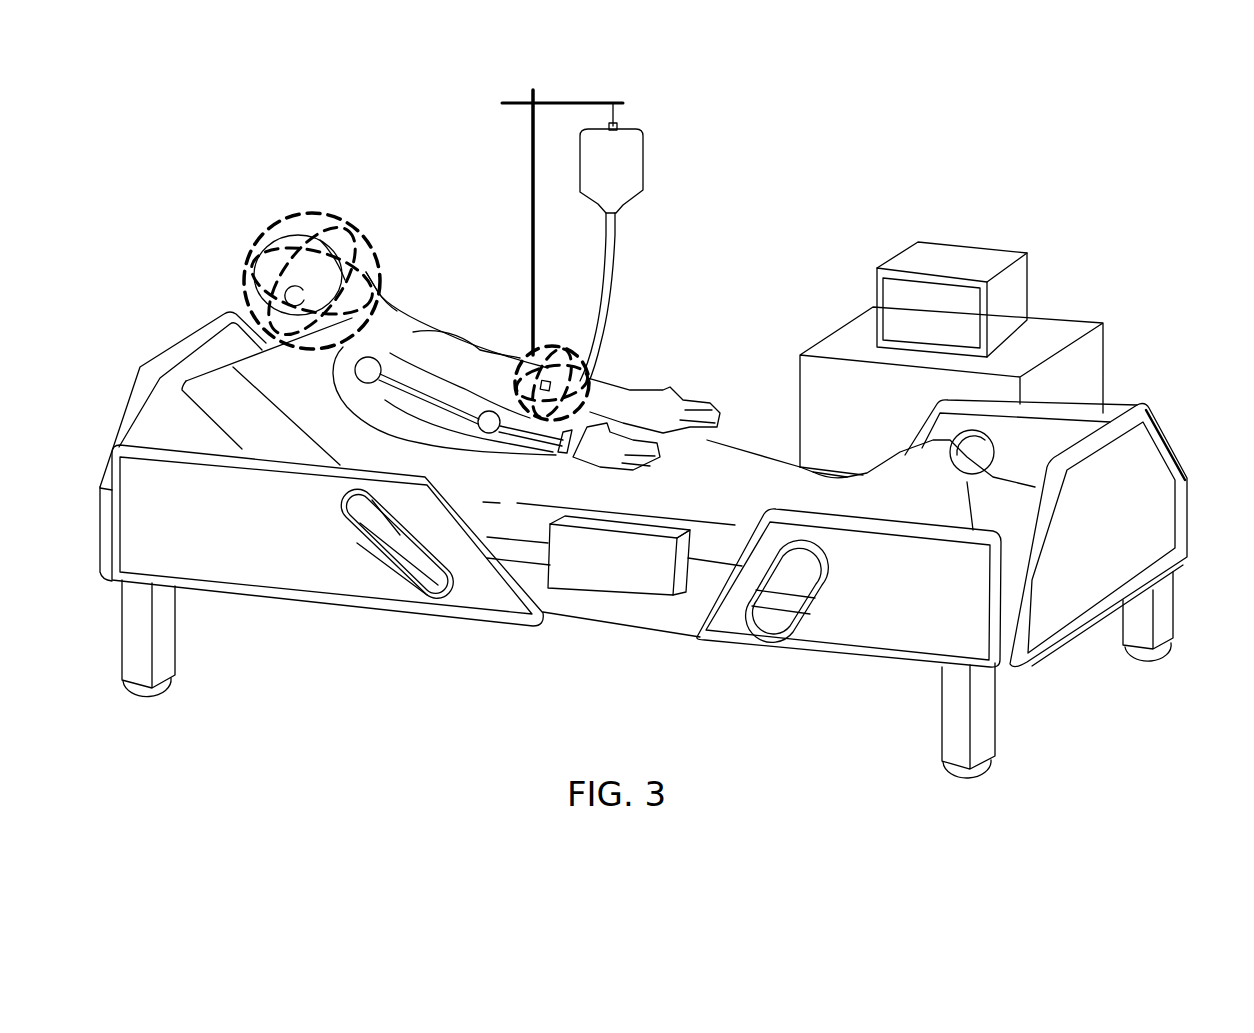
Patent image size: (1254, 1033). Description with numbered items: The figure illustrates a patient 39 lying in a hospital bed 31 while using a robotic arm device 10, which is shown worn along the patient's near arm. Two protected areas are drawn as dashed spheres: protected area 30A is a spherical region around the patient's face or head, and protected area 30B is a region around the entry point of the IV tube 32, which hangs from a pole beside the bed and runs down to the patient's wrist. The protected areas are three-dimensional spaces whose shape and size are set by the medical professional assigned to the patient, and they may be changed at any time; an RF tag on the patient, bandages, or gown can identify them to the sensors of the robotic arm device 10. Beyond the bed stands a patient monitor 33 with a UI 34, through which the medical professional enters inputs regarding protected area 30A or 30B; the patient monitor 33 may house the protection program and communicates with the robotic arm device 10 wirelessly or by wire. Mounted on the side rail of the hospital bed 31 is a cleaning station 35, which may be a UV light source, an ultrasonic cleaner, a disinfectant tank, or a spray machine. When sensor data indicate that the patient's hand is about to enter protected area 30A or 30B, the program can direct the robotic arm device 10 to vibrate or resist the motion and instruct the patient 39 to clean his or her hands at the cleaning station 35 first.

The robotic arm device 10 is at (627, 384).
The protected area 30A is at (268, 215).
The protected area 30B is at (562, 345).
The hospital bed 31 is at (1142, 455).
The IV tube 32 is at (608, 270).
The patient monitor 33 is at (951, 341).
The UI 34 is at (985, 337).
The cleaning station 35 is at (663, 593).
The patient 39 is at (424, 406).